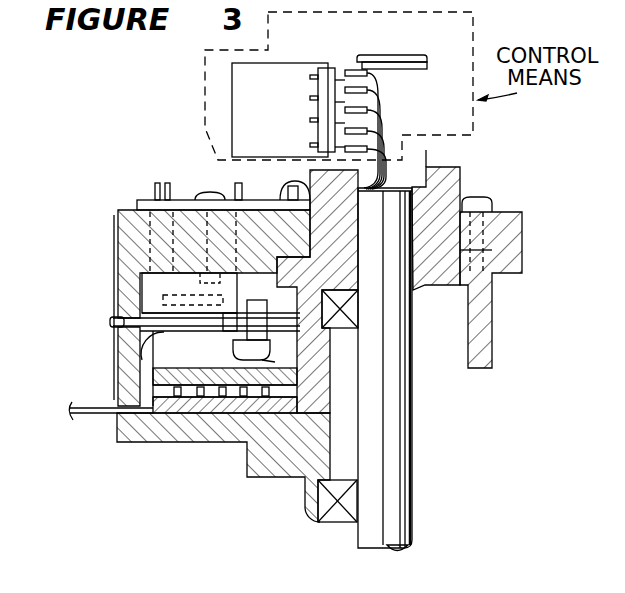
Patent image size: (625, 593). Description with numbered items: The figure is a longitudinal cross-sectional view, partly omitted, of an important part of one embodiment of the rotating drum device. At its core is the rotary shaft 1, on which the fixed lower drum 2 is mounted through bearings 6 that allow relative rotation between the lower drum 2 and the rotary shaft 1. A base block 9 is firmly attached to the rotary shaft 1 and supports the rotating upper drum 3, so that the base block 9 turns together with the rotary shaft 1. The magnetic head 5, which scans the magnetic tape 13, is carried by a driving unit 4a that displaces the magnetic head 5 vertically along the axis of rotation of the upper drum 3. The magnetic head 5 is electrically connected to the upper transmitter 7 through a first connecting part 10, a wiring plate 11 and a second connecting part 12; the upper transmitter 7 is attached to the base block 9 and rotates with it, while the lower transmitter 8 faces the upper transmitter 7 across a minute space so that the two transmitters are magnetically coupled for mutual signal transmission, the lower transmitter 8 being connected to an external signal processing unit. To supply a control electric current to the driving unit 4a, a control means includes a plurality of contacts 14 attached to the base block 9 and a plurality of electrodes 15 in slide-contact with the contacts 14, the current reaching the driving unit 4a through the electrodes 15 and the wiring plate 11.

The rotary shaft 1 is at (392, 492).
The fixed lower drum 2 is at (273, 465).
The rotating upper drum 3 is at (127, 240).
The driving unit 4a is at (140, 352).
The magnetic head 5 is at (113, 318).
The bearings 6 is at (350, 310).
The upper transmitter 7 is at (158, 413).
The lower transmitter 8 is at (187, 412).
The base block 9 is at (482, 323).
The first connecting part 10 is at (155, 190).
The wiring plate 11 is at (182, 200).
The second connecting part 12 is at (282, 188).
The magnetic tape 13 is at (117, 270).
The contacts 14 is at (343, 72).
The electrodes 15 is at (410, 60).